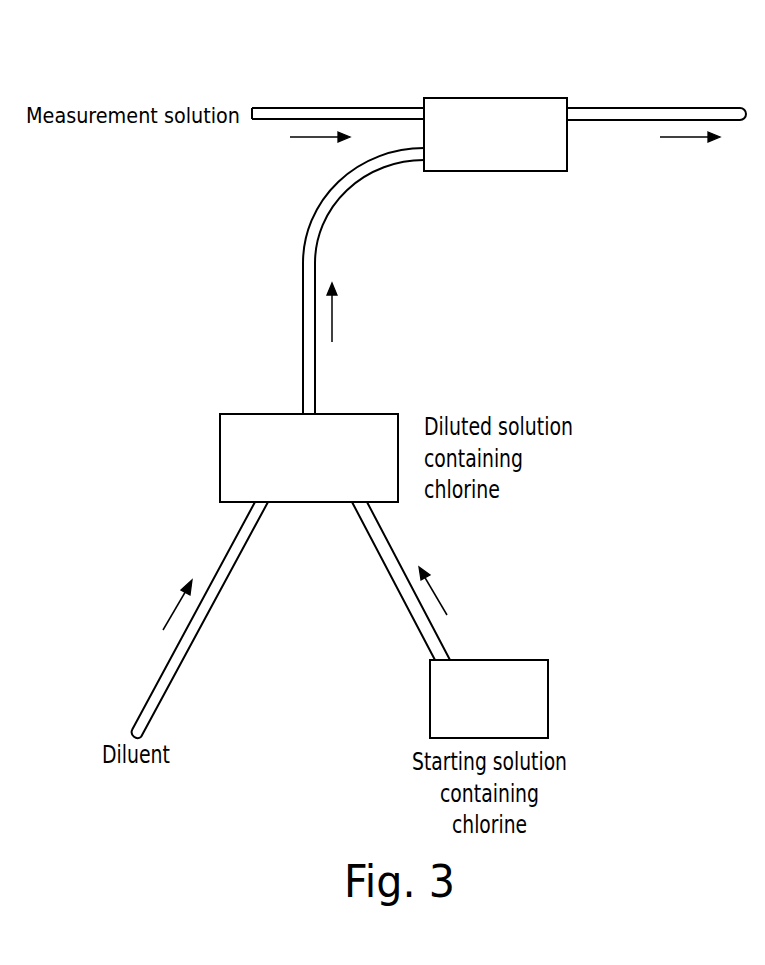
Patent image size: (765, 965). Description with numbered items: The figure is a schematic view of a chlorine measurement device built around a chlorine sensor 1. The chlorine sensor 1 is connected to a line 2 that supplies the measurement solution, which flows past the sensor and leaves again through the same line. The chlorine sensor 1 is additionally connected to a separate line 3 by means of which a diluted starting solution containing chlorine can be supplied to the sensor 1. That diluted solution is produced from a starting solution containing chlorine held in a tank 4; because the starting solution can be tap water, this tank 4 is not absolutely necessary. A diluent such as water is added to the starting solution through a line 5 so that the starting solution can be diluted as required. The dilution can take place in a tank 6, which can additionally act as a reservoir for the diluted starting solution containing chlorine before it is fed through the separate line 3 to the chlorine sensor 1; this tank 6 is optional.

The chlorine sensor 1 is at (511, 98).
The line 2 is at (377, 107).
The separate line 3 is at (308, 228).
The tank 4 is at (548, 692).
The line 5 is at (205, 613).
The tank 6 is at (220, 441).